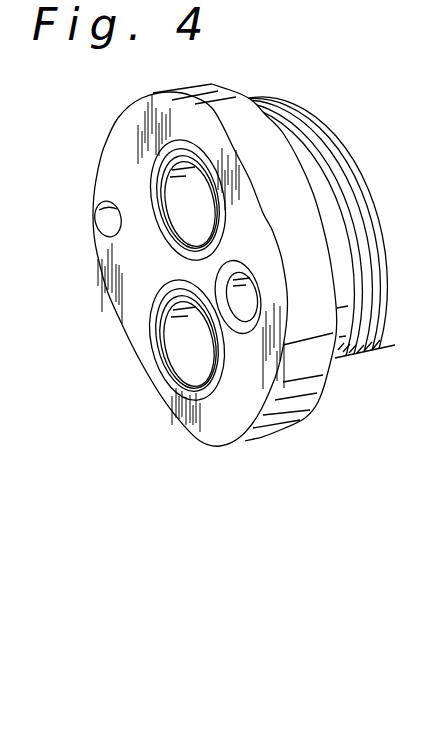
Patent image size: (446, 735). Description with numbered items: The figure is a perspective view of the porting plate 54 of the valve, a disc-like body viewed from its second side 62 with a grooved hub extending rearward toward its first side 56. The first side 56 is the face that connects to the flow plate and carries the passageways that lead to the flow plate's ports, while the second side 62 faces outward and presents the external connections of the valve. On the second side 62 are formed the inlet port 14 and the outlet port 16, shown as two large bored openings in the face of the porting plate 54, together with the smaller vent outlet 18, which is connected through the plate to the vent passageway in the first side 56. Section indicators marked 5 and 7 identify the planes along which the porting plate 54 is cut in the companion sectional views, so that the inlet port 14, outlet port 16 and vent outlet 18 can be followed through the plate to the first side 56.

The inlet port 14 is at (180, 212).
The outlet port 16 is at (183, 352).
The vent outlet 18 is at (247, 313).
The porting plate 54 is at (195, 80).
The first side 56 is at (322, 120).
The second side 62 is at (115, 133).
The section line 5- 5 is at (388, 22).
The section line 7- 7 is at (60, 206).